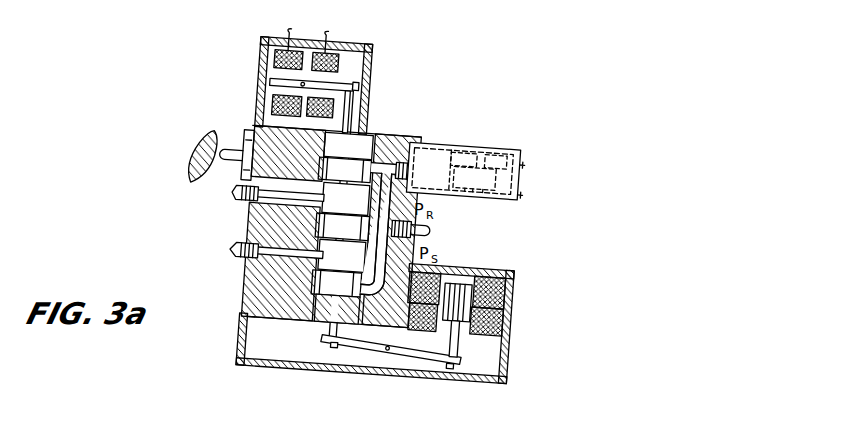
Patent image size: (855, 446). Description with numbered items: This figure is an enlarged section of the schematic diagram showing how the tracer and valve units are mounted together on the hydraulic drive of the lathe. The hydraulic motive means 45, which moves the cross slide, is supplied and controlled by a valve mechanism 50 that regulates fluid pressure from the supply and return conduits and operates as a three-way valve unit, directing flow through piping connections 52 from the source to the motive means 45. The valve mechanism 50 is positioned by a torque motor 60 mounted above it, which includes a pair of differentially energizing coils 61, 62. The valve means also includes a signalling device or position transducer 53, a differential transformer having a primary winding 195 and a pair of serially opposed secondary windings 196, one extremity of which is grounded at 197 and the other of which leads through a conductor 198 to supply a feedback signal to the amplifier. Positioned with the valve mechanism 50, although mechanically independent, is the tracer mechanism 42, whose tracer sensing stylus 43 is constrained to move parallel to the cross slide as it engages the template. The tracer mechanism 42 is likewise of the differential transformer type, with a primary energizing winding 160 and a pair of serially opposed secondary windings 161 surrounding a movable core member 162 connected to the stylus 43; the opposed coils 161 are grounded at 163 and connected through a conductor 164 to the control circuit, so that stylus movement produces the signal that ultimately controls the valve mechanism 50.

The tracer mechanism 42 is at (504, 142).
The tracer sensing stylus 43 is at (228, 151).
The hydraulic motive means 45 is at (288, 226).
The valve mechanism 50 is at (241, 264).
The piping connections 52 is at (212, 188).
The position transducer 53 is at (479, 256).
The torque motor 60 is at (374, 91).
The energizing coil 61 is at (276, 52).
The energizing coil 62 is at (328, 36).
The primary energizing winding 160 is at (460, 193).
The secondary windings 161 is at (497, 192).
The movable core member 162 is at (440, 147).
The ground connection 163 is at (522, 160).
The conductor 164 is at (521, 189).
The primary winding 195 is at (497, 307).
The secondary windings 196 is at (507, 352).
The ground connection 197 is at (506, 332).
The conductor 198 is at (506, 277).